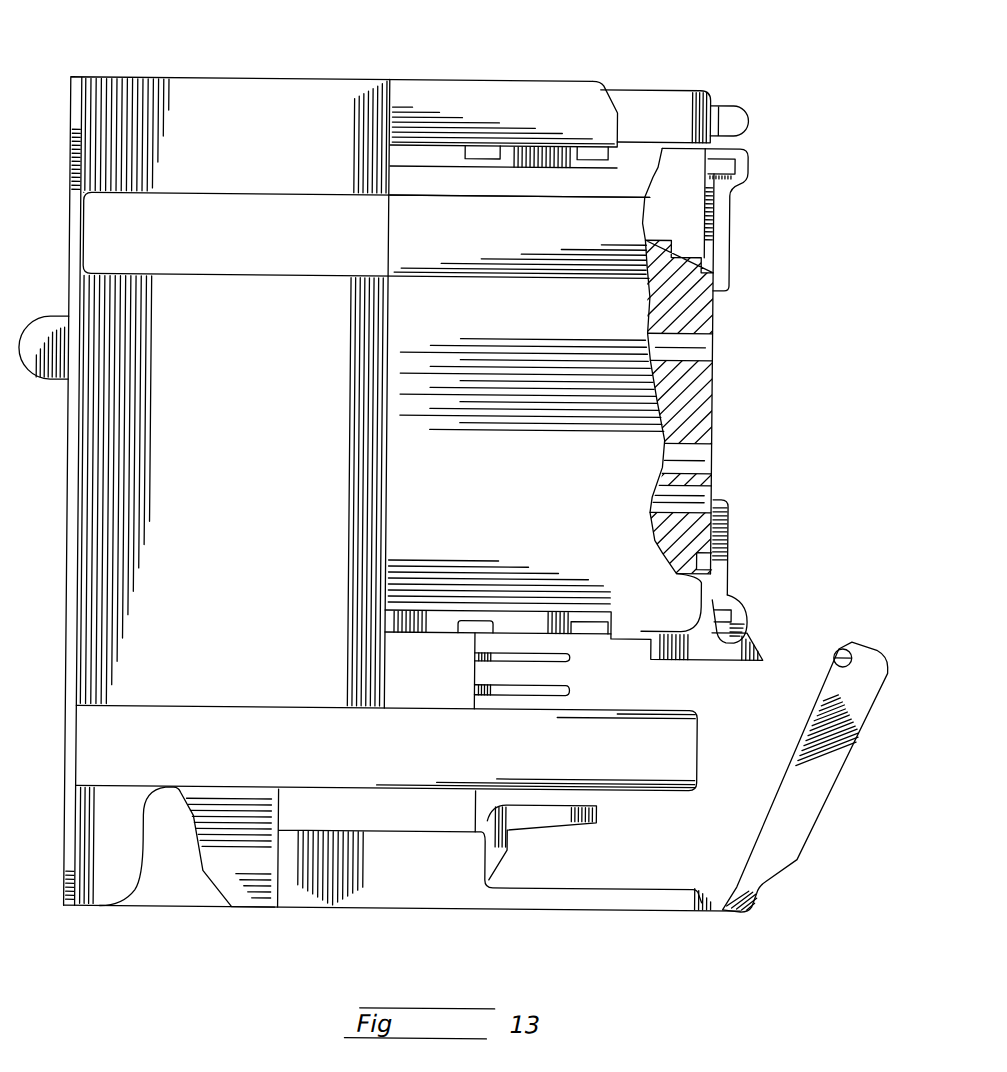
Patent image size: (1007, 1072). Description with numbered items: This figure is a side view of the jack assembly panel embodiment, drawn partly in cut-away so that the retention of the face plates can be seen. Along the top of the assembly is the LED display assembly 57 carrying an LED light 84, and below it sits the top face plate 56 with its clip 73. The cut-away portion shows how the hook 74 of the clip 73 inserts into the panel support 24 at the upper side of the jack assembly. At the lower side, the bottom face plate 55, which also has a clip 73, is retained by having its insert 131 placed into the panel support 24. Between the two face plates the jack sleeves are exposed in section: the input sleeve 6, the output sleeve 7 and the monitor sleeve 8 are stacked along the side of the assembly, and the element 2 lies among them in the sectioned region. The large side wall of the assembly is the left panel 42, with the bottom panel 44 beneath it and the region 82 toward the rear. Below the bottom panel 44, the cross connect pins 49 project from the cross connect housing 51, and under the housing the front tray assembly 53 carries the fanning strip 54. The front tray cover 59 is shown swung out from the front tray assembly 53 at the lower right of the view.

The contact element body 2 is at (683, 399).
The input sleeve 6 is at (651, 488).
The output sleeve 7 is at (661, 464).
The monitor sleeve 8 is at (700, 347).
The panel support 24 is at (715, 319).
The left panel 42 is at (491, 478).
The bottom panel 44 is at (539, 610).
The cross connect pins 49 is at (562, 690).
The cross connect housing 51 is at (335, 807).
The front tray assembly 53 is at (431, 873).
The fanning strip 54 is at (542, 817).
The bottom face plate 55 is at (754, 619).
The top face plate 56 is at (750, 167).
The LED display assembly 57 is at (643, 113).
The front tray cover 59 is at (809, 799).
The clip 73 is at (724, 239).
The hook 74 is at (679, 273).
The side wall 82 is at (219, 389).
The LED light 84 is at (742, 115).
The insert 131 is at (692, 533).